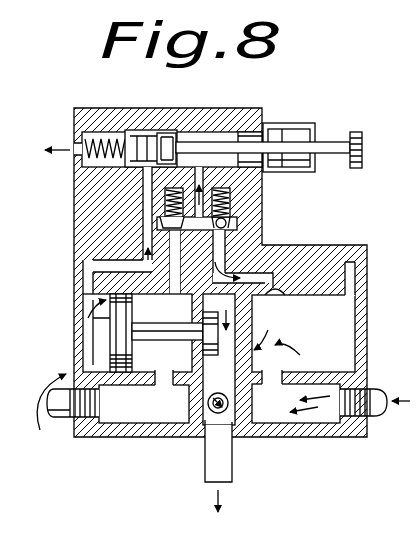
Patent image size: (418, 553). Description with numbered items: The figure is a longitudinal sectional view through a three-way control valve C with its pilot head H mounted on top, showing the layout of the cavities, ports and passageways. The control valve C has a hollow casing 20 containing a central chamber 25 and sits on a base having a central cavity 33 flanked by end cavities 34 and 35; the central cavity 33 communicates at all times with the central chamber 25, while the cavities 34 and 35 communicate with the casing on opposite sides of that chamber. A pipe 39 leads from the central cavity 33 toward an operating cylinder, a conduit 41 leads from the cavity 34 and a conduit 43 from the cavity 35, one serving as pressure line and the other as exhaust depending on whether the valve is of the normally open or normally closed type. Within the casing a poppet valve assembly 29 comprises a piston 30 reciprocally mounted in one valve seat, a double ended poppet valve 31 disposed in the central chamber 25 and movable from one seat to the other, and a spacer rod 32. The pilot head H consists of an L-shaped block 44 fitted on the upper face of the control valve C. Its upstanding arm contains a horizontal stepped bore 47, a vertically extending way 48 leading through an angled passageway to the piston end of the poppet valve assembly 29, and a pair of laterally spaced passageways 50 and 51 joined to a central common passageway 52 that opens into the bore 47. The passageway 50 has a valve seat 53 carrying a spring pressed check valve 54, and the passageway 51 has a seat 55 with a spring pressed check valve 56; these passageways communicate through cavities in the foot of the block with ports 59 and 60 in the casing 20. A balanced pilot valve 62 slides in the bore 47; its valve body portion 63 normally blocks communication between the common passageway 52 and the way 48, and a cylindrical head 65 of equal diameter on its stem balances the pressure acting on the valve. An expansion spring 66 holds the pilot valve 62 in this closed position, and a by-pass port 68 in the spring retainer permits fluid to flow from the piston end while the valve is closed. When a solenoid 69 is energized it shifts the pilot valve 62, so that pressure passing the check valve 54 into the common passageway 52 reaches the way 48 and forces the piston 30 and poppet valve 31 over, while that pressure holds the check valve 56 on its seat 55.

The pilot head H is at (78, 106).
The control valve C is at (47, 414).
The hollow casing 20 is at (76, 322).
The central chamber 25 is at (256, 312).
The poppet valve assembly 29 is at (108, 355).
The piston 30 is at (108, 335).
The double ended poppet valve 31 is at (203, 358).
The spacer rod 32 is at (170, 336).
The central cavity 33 is at (215, 422).
The end cavity 34 is at (117, 418).
The end cavity 35 is at (323, 418).
The conduit or pipe 39 is at (226, 455).
The conduit or pipe 41 is at (58, 418).
The pipe or conduit 43 is at (378, 392).
The block 44 is at (152, 108).
The stepped bore 47 is at (230, 138).
The vertically extending way 48 is at (146, 197).
The passageway 50 is at (170, 208).
The passageway 51 is at (258, 246).
The common passageway 52 is at (230, 192).
The valve seat 53 is at (146, 247).
The spring pressed check valve 54 is at (165, 224).
The seat 55 is at (232, 222).
The spring pressed check valve 56 is at (226, 220).
The port 59 is at (137, 333).
The port 60 is at (278, 296).
The balanced pilot valve 62 is at (196, 140).
The valve body portion 63 is at (170, 134).
The cylindrical head 65 is at (264, 134).
The expansion spring 66 is at (90, 137).
The by-pass port 68 is at (76, 152).
The solenoid 69 is at (292, 127).